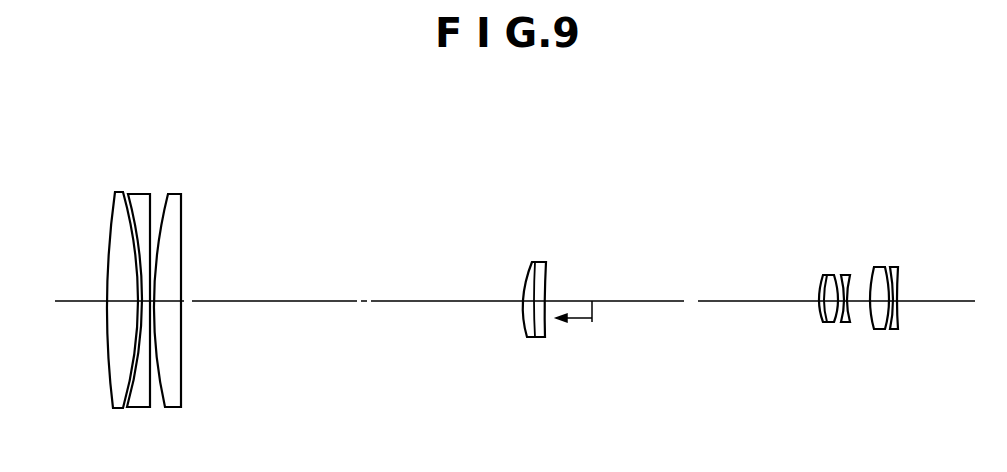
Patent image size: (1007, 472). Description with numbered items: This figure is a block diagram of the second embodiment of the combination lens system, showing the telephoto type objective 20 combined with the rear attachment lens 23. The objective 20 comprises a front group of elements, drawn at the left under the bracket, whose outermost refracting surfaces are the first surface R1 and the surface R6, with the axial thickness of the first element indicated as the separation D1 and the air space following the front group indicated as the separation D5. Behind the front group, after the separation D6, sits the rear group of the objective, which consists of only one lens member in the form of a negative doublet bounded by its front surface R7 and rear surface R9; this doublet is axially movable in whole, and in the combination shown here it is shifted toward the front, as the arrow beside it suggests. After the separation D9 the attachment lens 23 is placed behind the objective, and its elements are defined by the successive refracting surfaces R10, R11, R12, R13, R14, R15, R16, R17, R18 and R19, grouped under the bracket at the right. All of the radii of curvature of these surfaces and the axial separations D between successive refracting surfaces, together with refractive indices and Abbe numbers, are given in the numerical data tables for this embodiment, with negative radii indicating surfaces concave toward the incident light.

The telephoto type objective 20 is at (552, 146).
The attachment lens 23 is at (900, 210).
The axial separation D1 is at (122, 301).
The axial separation D5 is at (167, 301).
The axial separation D6 is at (862, 297).
The axial separation D9 is at (710, 301).
The refracting surface R1 is at (112, 393).
The refracting surface R6 is at (181, 393).
The front surface of negative doublet R7 is at (530, 337).
The rear surface of negative doublet R9 is at (548, 337).
The refracting surface R10 is at (820, 321).
The refracting surface R11 is at (824, 323).
The refracting surface R12 is at (832, 323).
The refracting surface R13 is at (841, 323).
The refracting surface R14 is at (848, 323).
The refracting surface R15 is at (872, 330).
The refracting surface R16 is at (880, 330).
The refracting surface R17 is at (890, 330).
The refracting surface R18 is at (898, 330).
The refracting surface R19 is at (897, 330).